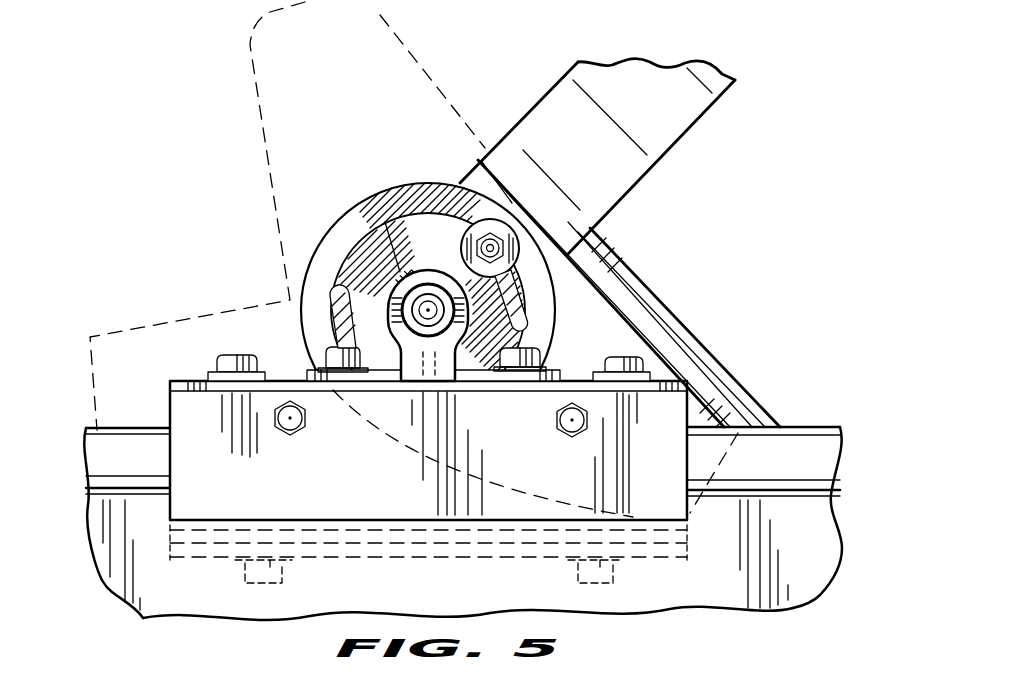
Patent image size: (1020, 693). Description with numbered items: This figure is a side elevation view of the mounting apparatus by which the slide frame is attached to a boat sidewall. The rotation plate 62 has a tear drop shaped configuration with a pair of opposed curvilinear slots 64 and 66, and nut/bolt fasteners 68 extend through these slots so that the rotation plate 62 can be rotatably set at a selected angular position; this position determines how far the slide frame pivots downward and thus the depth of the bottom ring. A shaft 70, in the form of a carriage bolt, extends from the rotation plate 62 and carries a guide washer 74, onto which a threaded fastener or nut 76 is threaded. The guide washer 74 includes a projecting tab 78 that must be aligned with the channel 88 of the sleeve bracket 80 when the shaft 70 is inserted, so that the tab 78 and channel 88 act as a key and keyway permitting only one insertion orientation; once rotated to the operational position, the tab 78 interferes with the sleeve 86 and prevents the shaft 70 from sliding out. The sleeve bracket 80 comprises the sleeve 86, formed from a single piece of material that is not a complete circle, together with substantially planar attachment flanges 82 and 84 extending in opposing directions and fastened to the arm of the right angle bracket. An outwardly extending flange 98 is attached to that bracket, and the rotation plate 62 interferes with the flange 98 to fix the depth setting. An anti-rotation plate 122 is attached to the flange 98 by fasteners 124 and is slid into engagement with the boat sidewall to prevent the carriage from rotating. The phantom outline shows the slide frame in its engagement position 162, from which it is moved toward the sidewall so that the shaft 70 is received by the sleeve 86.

The engagement position 162 is at (255, 97).
The projecting tab 78 is at (402, 274).
The guide washer 74 is at (434, 285).
The shaft 70 is at (395, 292).
The nut/bolt fasteners 68 is at (507, 248).
The threaded fastener or nut 76 is at (522, 296).
The curvilinear slot 64 is at (560, 312).
The curvilinear slot 66 is at (332, 302).
The attachment flange 82 is at (305, 372).
The sleeve 86 is at (470, 326).
The rotation plate 62 is at (712, 402).
The sleeve bracket 80 is at (380, 390).
The attachment flange 84 is at (528, 381).
The channel 88 is at (432, 388).
The outwardly extending flange 98 is at (696, 536).
The anti-rotation plate 122 is at (670, 555).
The fasteners 124 is at (286, 578).